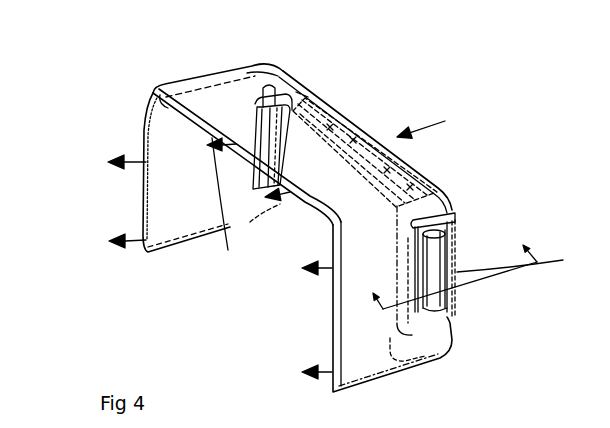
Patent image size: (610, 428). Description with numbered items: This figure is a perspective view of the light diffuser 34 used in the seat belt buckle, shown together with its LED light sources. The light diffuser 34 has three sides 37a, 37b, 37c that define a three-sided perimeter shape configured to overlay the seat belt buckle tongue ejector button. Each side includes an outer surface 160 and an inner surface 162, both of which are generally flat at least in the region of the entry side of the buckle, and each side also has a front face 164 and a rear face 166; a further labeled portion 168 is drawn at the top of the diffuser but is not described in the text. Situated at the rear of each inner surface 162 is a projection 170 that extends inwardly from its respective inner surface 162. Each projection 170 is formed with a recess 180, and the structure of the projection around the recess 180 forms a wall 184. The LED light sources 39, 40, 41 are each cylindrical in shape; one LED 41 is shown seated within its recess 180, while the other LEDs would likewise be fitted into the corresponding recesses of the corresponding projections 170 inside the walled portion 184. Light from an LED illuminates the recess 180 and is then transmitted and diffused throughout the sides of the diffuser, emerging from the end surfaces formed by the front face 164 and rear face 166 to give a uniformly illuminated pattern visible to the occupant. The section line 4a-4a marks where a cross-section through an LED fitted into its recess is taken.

The light diffuser 34 is at (435, 122).
The side 37a is at (143, 147).
The side 37b is at (228, 250).
The side 37c is at (340, 322).
The LED light source 39 is at (253, 128).
The LED light source 40 is at (312, 112).
The LED light source 41 is at (586, 255).
The section line 4a- 4a is at (452, 270).
The outer surface 160 is at (297, 167).
The inner surface 162 is at (110, 240).
The front face 164 is at (196, 122).
The rear face 166 is at (308, 97).
The cap 168 is at (282, 80).
The projection 170 is at (254, 102).
The recess 180 is at (563, 260).
The wall 184 is at (450, 289).